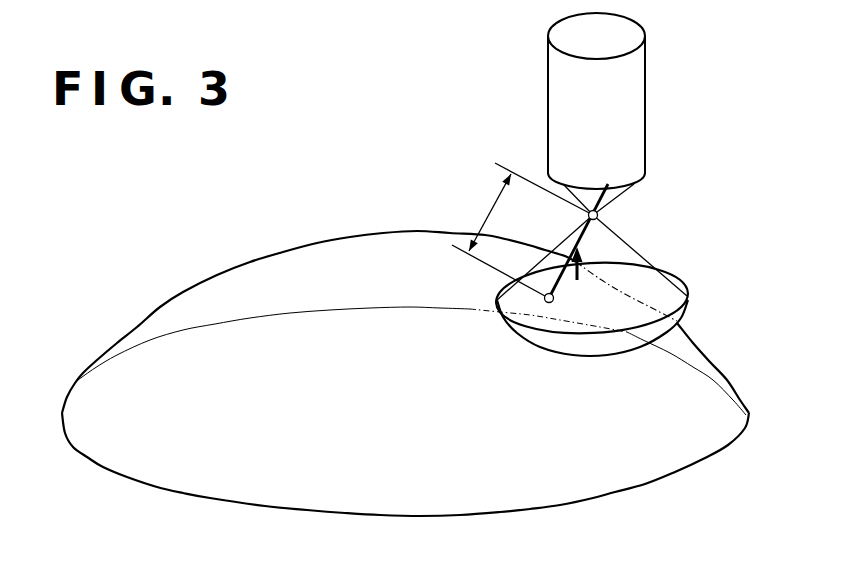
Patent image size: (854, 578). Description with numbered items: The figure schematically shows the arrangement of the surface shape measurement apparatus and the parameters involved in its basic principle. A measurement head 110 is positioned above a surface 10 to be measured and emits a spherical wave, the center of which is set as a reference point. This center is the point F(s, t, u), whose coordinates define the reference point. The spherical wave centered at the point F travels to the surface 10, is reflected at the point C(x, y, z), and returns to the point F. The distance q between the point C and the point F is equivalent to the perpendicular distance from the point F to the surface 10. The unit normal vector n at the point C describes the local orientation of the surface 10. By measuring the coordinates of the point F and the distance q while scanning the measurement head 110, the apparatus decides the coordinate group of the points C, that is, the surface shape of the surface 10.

The surface to be measured 10 is at (160, 304).
The measurement head 110 is at (625, 85).
The reference point F(s, t, u) F is at (604, 213).
The point C(x, y, z) C is at (550, 304).
The distance q is at (522, 229).
The unit normal vector n is at (590, 258).